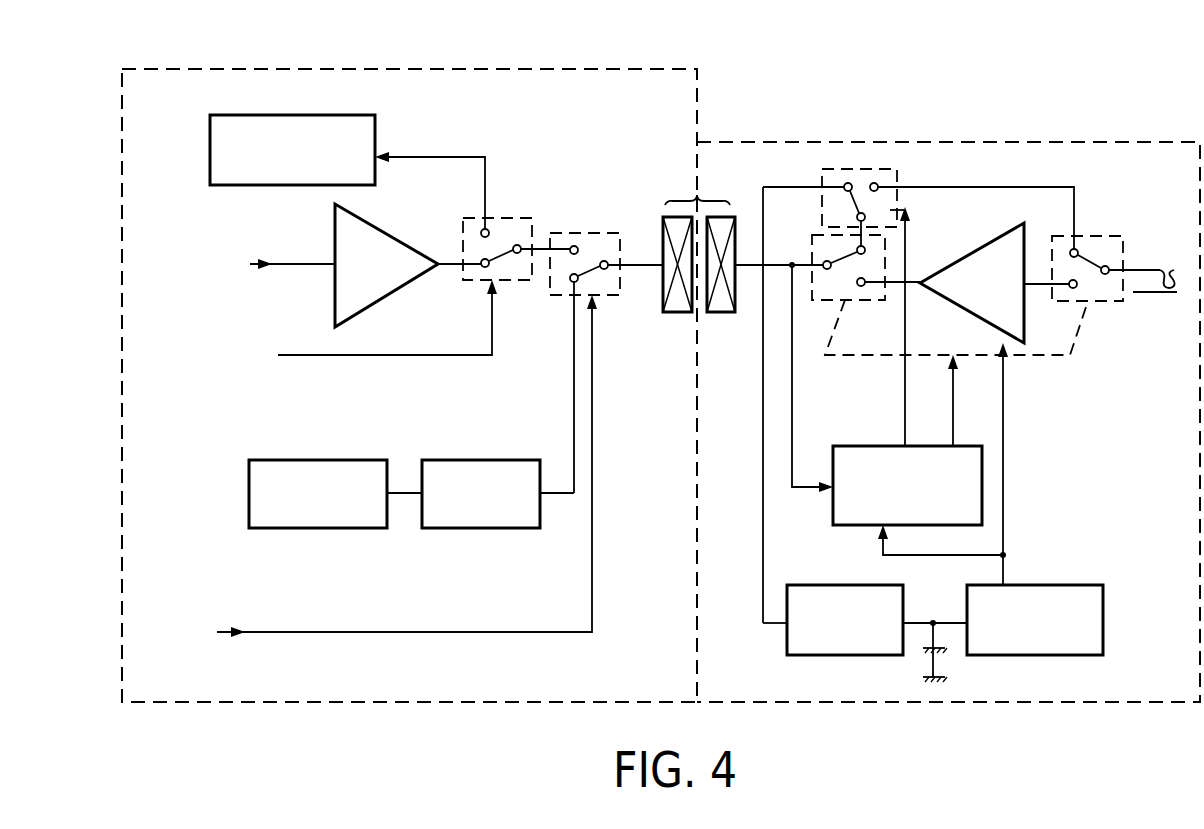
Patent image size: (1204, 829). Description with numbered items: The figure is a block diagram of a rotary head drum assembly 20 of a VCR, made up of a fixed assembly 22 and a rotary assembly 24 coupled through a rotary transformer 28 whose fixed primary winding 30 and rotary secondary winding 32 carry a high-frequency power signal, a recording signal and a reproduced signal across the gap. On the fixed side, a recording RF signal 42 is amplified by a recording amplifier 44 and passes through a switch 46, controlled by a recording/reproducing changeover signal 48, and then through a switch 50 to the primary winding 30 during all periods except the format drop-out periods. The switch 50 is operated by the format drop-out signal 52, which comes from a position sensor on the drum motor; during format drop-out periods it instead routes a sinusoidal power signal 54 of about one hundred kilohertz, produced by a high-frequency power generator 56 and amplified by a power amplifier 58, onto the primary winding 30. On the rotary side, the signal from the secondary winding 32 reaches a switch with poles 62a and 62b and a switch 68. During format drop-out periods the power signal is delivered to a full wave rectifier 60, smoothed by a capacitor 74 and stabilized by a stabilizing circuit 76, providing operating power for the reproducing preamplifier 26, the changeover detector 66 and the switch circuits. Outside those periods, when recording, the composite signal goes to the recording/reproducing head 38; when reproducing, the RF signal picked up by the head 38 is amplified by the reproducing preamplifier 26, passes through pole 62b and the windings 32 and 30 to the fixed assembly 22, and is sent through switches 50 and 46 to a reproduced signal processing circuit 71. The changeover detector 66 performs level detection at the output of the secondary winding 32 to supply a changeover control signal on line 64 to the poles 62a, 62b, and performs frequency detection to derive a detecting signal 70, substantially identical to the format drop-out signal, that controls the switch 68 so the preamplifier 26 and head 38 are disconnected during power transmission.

The rotary head drum assembly 20 is at (612, 44).
The fixed assembly 22 is at (488, 68).
The rotary assembly 24 is at (980, 141).
The reproducing preamplifier 26 is at (965, 259).
The rotary transformer 28 is at (700, 198).
The primary winding 30 is at (677, 312).
The secondary winding 32 is at (718, 312).
The recording/reproducing head 38 is at (1166, 270).
The recording RF signal 42 is at (228, 235).
The recording amplifier 44 is at (393, 237).
The switch 46 is at (502, 214).
The recording/reproducing changeover signal 48 is at (492, 328).
The switch 50 is at (590, 232).
The format drop-out signal 52 is at (540, 630).
The sinusoidal wave power signal 54 is at (553, 490).
The high-frequency power generator 56 is at (352, 528).
The power amplifier 58 is at (497, 528).
The full wave rectifier 60 is at (787, 646).
The switch pole 62a is at (812, 260).
The switch pole 62b is at (1096, 236).
The recording/reproducing changeover signal line 64 is at (955, 395).
The changeover detector 66 is at (833, 507).
The switch 68 is at (905, 172).
The format drop-out detecting signal 70 is at (905, 310).
The reproduced signal processing circuit 71 is at (290, 114).
The capacitor 74 is at (923, 650).
The stabilizing circuit 76 is at (1103, 637).